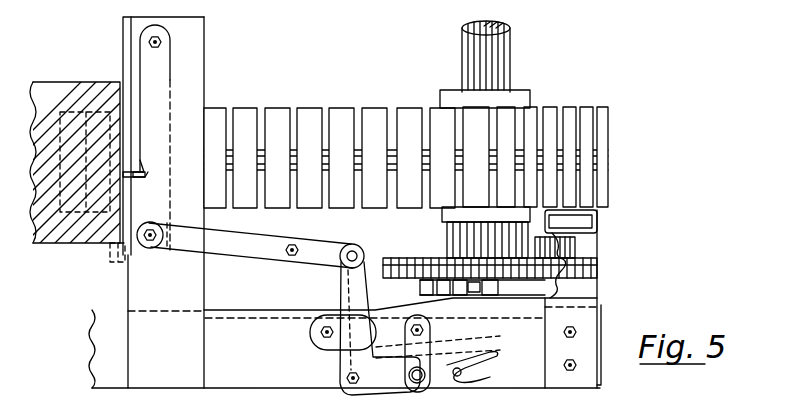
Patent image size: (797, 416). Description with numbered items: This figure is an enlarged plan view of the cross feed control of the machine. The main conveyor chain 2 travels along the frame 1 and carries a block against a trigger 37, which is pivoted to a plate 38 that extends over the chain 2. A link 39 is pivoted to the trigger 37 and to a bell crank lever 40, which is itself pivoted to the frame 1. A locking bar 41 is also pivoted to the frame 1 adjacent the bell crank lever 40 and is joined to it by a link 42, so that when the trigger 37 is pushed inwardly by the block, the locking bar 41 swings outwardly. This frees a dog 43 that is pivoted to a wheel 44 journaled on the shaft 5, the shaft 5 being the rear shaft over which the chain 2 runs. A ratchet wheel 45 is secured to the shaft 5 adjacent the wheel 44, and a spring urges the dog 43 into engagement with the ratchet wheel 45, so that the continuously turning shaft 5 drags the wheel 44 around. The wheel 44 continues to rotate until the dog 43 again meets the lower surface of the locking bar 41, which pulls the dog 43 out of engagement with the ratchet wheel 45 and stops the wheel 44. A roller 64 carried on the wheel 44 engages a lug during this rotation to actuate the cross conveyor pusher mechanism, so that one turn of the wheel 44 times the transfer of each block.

The frame 1 is at (345, 202).
The main conveyor chain 2 is at (277, 117).
The shaft 5 is at (497, 77).
The trigger 37 is at (158, 128).
The plate 38 is at (188, 75).
The link 39 is at (263, 247).
The bell crank lever 40 is at (350, 355).
The locking bar 41 is at (437, 344).
The link 42 is at (422, 372).
The dog 43 is at (560, 283).
The wheel 44 is at (598, 270).
The ratchet wheel 45 is at (420, 288).
The roller 64 is at (582, 240).